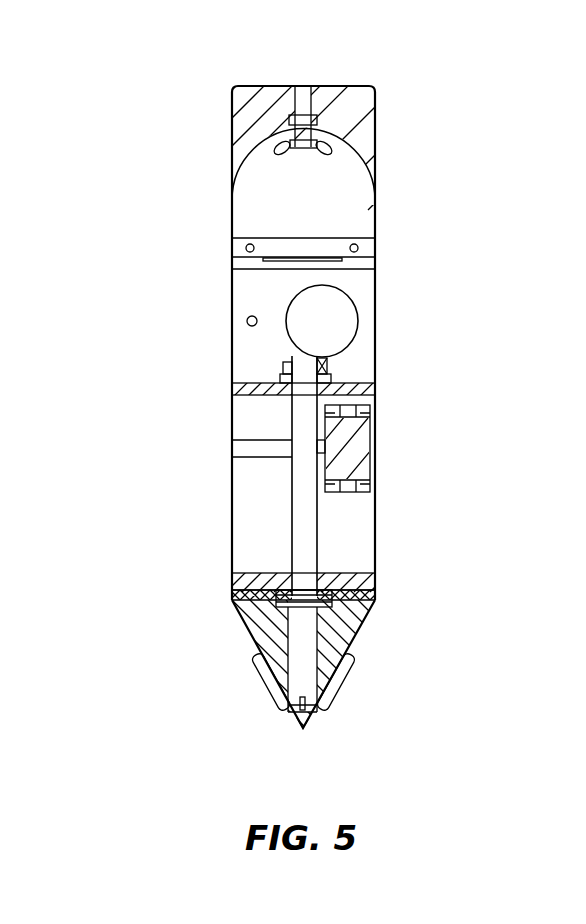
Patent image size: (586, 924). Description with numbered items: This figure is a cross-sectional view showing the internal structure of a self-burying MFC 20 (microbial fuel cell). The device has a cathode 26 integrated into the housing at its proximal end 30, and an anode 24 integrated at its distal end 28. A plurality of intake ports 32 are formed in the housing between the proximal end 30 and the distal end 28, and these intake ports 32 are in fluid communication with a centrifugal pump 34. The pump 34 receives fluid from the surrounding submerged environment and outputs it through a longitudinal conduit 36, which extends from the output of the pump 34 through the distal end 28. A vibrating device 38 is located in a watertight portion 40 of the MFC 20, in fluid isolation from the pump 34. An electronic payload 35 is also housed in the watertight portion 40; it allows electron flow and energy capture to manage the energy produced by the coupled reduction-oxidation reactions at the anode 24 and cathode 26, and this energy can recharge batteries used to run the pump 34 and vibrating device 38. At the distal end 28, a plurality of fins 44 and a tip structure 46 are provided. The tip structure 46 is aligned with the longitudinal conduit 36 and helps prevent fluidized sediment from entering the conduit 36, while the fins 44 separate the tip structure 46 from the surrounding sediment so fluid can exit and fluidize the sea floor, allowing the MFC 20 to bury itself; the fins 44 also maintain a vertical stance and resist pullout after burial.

The self-burying MFC 20 is at (136, 70).
The proximal end 30 is at (334, 86).
The cathode 26 is at (322, 207).
The centrifugal pump 34 is at (340, 318).
The intake ports 32 is at (247, 322).
The electronic payload 35 is at (265, 407).
The watertight portion 40 is at (265, 522).
The vibrating device 38 is at (352, 430).
The longitudinal conduit 36 is at (302, 547).
The anode 24 is at (258, 628).
The fins 44 is at (340, 690).
The tip structure 46 is at (310, 728).
The distal end 28 is at (298, 728).